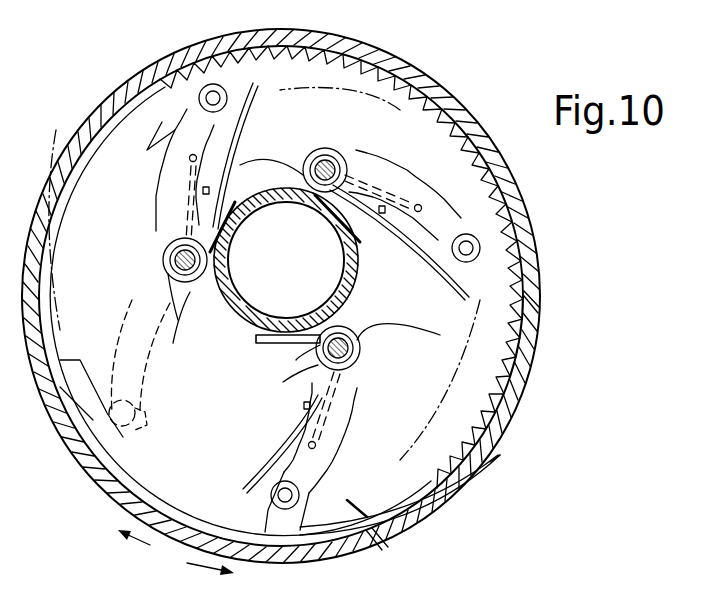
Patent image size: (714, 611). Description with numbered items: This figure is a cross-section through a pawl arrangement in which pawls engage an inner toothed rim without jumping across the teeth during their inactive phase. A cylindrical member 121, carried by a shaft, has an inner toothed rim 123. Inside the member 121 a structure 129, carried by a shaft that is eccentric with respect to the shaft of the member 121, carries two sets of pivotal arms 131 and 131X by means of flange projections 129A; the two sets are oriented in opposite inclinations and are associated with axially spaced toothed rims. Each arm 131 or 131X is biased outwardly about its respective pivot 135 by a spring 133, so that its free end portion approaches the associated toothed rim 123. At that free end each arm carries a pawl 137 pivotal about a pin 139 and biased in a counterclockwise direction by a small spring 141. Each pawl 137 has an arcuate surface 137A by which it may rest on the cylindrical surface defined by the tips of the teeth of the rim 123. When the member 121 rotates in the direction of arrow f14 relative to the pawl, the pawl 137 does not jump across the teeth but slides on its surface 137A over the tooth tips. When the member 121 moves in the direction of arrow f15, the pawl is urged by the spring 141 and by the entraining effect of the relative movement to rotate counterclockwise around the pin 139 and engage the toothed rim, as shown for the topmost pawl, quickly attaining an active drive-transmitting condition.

The cylindrical member 121 is at (405, 70).
The toothed rim 123 is at (318, 56).
The structure 129 is at (230, 332).
The flange projections 129A is at (444, 328).
The pivotal arm 131 is at (166, 168).
The pivotal arm 131X is at (125, 312).
The spring 133 is at (177, 229).
The pivot 135 is at (178, 320).
The pawl 137 is at (353, 497).
The arcuate surface 137A is at (380, 545).
The pin 139 is at (269, 500).
The small spring 141 is at (278, 460).
The arrow f14 is at (168, 547).
The arrow f15 is at (200, 568).